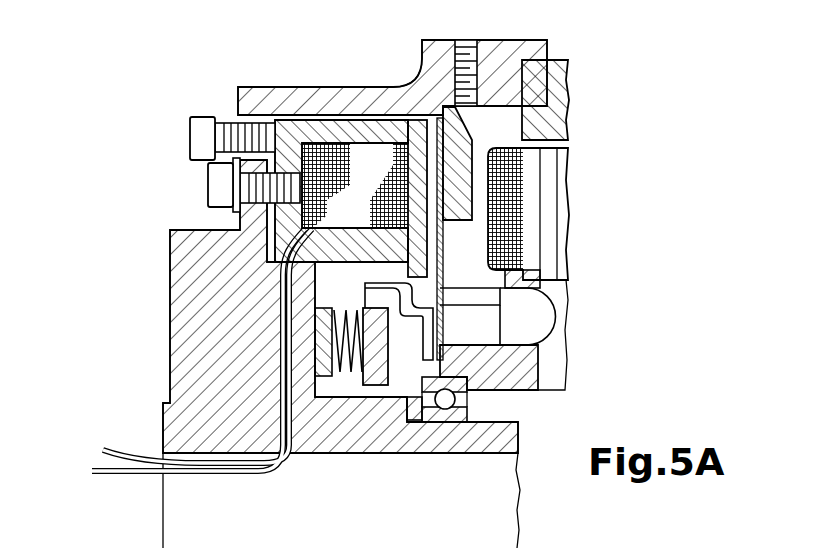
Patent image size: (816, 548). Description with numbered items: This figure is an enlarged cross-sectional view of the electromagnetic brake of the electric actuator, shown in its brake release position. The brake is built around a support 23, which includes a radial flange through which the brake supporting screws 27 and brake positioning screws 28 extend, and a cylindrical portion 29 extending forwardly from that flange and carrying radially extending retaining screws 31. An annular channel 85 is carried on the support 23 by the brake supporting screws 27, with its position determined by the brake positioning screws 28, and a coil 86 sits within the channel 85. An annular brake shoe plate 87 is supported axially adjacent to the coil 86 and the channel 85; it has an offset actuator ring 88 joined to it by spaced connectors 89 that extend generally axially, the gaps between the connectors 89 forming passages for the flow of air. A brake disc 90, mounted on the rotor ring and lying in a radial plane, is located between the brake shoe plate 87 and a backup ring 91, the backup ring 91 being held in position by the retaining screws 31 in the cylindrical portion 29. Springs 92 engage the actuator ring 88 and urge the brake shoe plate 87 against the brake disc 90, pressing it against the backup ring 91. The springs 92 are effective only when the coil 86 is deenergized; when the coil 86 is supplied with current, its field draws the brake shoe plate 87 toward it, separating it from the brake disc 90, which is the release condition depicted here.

The support 23 is at (311, 453).
The brake supporting screws 27 is at (208, 194).
The brake positioning screws 28 is at (196, 142).
The cylindrical portion 29 is at (322, 92).
The retaining screws 31 is at (463, 53).
The annular channel 85 is at (288, 130).
The coil 86 is at (363, 152).
The annular brake shoe plate 87 is at (437, 262).
The actuator ring 88 is at (376, 348).
The connectors 89 is at (383, 285).
The brake disc 90 is at (444, 238).
The backup ring 91 is at (467, 156).
The springs 92 is at (344, 378).